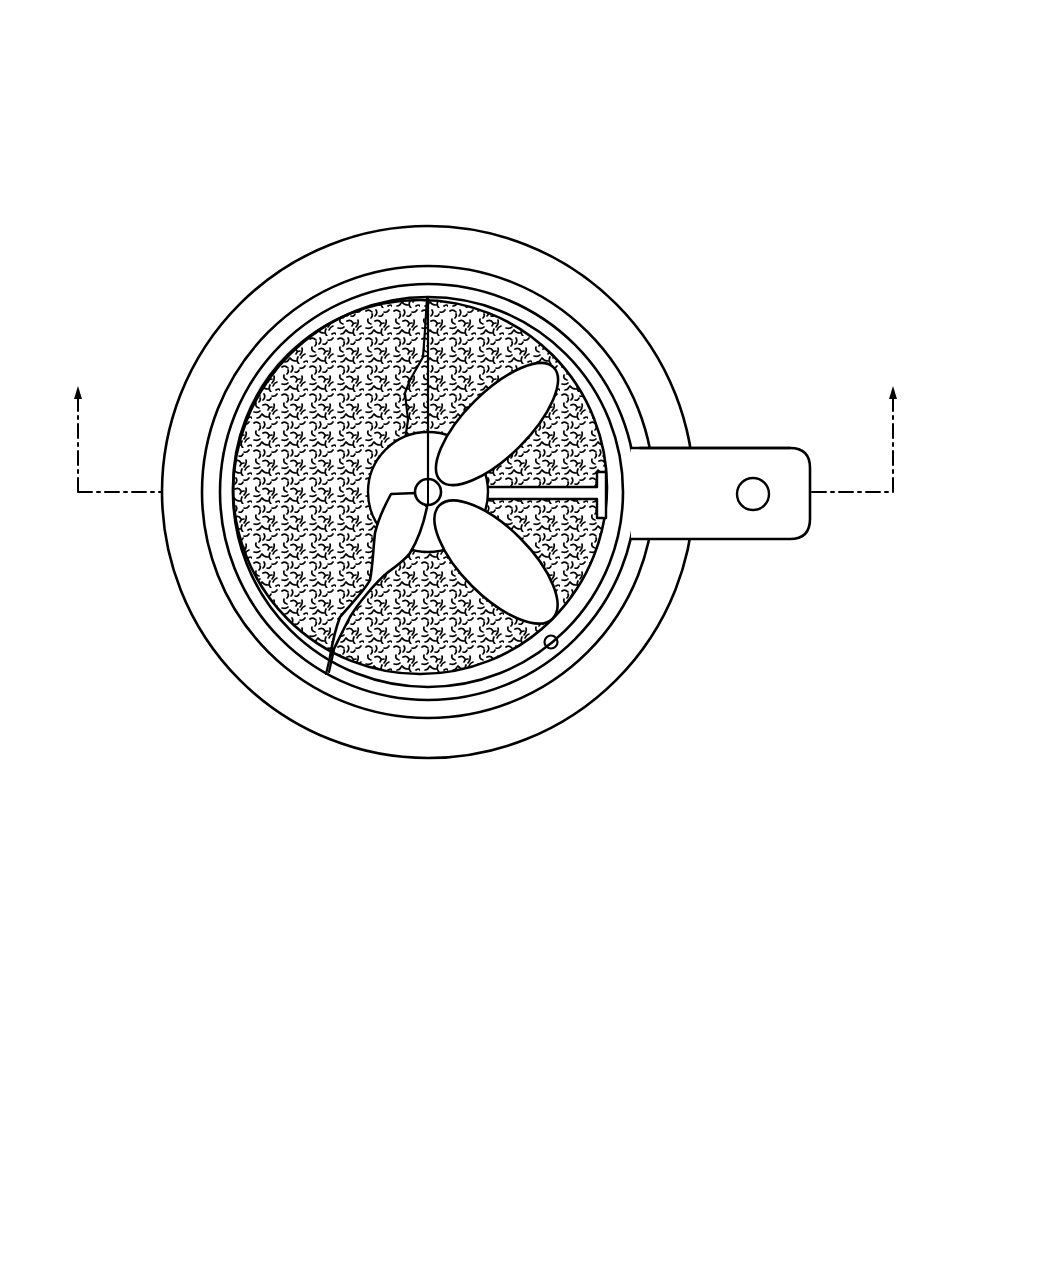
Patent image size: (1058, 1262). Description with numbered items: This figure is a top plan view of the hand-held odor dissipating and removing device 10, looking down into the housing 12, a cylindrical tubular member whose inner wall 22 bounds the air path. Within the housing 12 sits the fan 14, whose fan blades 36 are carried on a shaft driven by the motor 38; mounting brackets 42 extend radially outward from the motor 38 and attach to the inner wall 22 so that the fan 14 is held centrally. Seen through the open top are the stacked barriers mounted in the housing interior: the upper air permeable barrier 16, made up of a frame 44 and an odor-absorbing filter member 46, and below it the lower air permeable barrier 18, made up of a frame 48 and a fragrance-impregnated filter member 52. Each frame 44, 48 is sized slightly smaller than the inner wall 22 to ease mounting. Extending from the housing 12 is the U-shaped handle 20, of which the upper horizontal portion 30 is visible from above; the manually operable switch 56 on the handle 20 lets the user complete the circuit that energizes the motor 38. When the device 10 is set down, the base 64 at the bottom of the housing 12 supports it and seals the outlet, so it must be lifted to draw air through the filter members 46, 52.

The hand-held odor dissipating and removing device 10 is at (120, 101).
The housing 12 is at (545, 327).
The fan 14 is at (451, 484).
The upper air permeable barrier 16 is at (357, 330).
The lower air permeable barrier 18 is at (577, 432).
The handle 20 is at (710, 520).
The inner wall 22 is at (556, 648).
The upper horizontal portion 30 is at (752, 450).
The fan blades 36 is at (512, 578).
The motor 38 is at (428, 553).
The mounting brackets 42 is at (553, 496).
The frame 44 is at (283, 628).
The filter member 46 is at (273, 566).
The frame 48 is at (503, 318).
The filter member 52 is at (573, 403).
The switch 56 is at (757, 498).
The base 64 is at (453, 227).